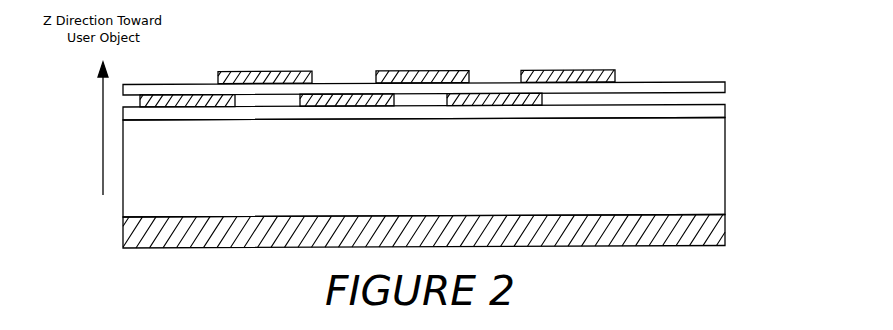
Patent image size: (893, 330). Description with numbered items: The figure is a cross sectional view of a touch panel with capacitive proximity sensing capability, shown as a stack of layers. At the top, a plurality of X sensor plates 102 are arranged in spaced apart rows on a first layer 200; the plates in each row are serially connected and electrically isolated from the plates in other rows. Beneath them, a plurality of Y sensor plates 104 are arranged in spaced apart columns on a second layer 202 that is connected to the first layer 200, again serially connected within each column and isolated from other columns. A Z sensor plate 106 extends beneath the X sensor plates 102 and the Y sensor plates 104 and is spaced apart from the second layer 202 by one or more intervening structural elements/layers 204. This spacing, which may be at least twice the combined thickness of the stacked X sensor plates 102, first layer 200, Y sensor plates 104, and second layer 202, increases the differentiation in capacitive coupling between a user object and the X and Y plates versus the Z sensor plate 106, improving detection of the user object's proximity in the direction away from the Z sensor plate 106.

The X sensor plates 102 is at (427, 63).
The Y sensor plates 104 is at (361, 63).
The Z sensor plate 106 is at (460, 227).
The first layer 200 is at (460, 79).
The second layer 202 is at (460, 103).
The intervening structural elements/layers 204 is at (460, 165).